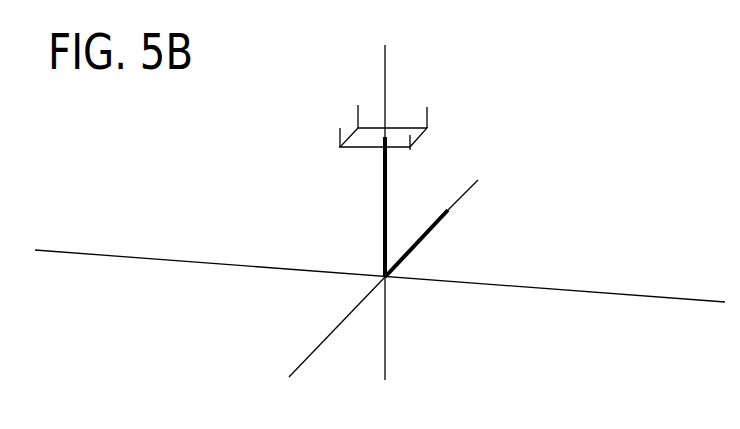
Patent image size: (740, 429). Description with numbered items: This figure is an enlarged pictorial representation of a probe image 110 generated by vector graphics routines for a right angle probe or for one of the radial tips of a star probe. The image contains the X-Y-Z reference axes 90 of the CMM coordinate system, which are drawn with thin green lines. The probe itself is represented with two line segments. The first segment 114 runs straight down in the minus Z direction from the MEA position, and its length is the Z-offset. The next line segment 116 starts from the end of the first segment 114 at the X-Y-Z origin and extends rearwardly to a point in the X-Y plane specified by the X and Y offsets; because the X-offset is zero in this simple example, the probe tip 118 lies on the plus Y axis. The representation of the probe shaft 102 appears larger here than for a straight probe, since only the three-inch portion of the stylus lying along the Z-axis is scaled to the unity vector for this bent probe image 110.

The X-Y-Z reference axes 90 is at (200, 262).
The probe shaft 102 is at (340, 133).
The probe image 110 is at (662, 127).
The first segment 114 is at (385, 222).
The line segment 116 is at (422, 243).
The probe tip 118 is at (447, 209).